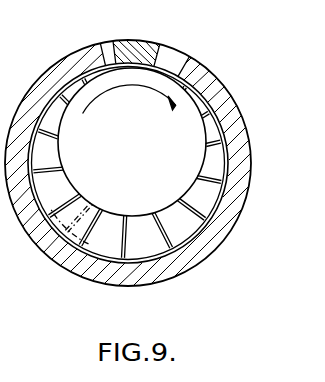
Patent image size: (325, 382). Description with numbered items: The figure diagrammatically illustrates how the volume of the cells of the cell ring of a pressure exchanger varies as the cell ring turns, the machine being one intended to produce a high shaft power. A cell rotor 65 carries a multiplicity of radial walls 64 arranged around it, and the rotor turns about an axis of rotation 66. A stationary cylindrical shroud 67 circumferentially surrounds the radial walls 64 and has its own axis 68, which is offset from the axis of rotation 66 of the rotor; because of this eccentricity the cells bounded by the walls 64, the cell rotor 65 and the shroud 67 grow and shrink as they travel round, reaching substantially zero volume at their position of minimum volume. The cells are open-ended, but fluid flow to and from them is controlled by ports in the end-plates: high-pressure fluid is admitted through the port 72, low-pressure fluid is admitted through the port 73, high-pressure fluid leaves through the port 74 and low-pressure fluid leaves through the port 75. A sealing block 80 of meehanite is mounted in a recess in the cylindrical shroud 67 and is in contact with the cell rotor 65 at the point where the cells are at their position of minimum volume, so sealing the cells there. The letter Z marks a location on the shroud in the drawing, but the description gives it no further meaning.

The radial walls 64 is at (219, 182).
The cell rotor 65 is at (113, 134).
The axis of rotation 66 is at (130, 141).
The stationary cylindrical shroud 67 is at (204, 73).
The axis 68 is at (128, 163).
The port 72 is at (212, 110).
The port 73 is at (53, 223).
The port 74 is at (62, 90).
The port 75 is at (100, 262).
The sealing block 80 is at (121, 44).
The zone Z is at (186, 65).